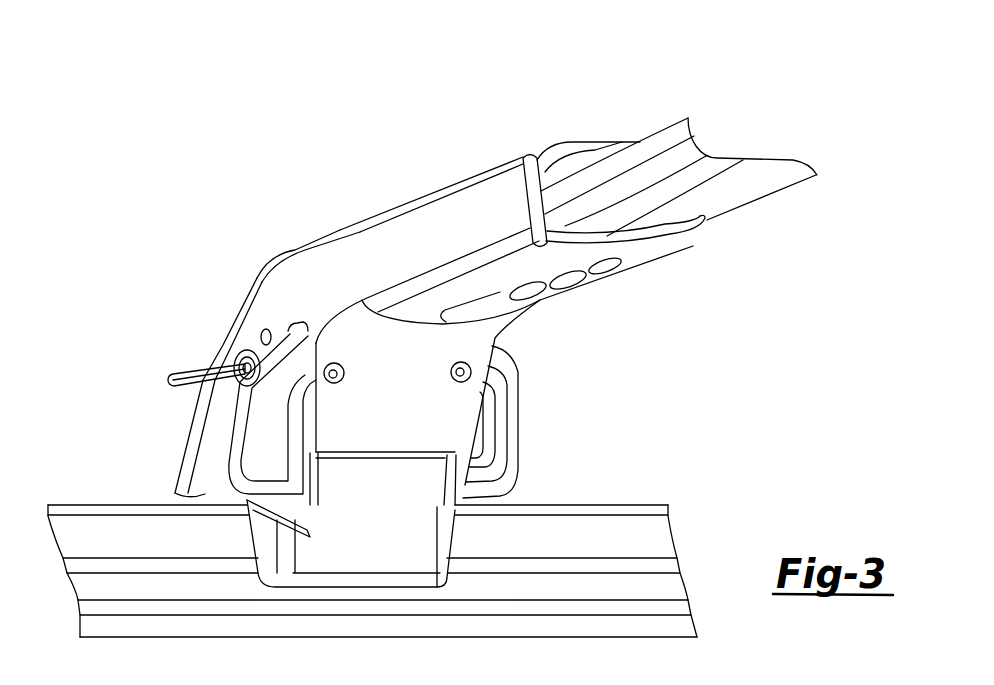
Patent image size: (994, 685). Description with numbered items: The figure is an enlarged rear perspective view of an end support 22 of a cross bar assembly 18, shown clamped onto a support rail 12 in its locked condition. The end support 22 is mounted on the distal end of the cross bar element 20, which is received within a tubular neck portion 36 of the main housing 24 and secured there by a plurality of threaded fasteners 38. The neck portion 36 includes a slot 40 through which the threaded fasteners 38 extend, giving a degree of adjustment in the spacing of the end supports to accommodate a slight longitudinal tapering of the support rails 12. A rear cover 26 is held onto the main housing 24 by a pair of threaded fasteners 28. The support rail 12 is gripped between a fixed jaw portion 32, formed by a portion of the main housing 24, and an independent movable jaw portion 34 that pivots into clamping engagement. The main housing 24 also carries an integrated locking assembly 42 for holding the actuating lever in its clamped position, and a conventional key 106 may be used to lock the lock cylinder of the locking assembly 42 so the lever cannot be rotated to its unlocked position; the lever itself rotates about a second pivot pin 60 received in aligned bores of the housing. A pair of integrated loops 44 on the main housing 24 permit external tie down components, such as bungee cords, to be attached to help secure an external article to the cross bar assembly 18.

The support rail 12 is at (612, 528).
The cross bar assembly 18 is at (223, 177).
The cross bar element 20 is at (641, 148).
The end support 22 is at (300, 237).
The main housing 24 is at (290, 287).
The rear cover 26 is at (440, 432).
The threaded fasteners 28 is at (458, 383).
The fixed jaw portion 32 is at (200, 493).
The movable jaw portion 34 is at (407, 522).
The tubular neck portion 36 is at (487, 173).
The threaded fasteners 38 is at (575, 273).
The slot 40 is at (607, 264).
The locking assembly 42 is at (233, 357).
The integrated loops 44 is at (240, 452).
The second pivot pin 60 is at (261, 338).
The key 106 is at (183, 388).